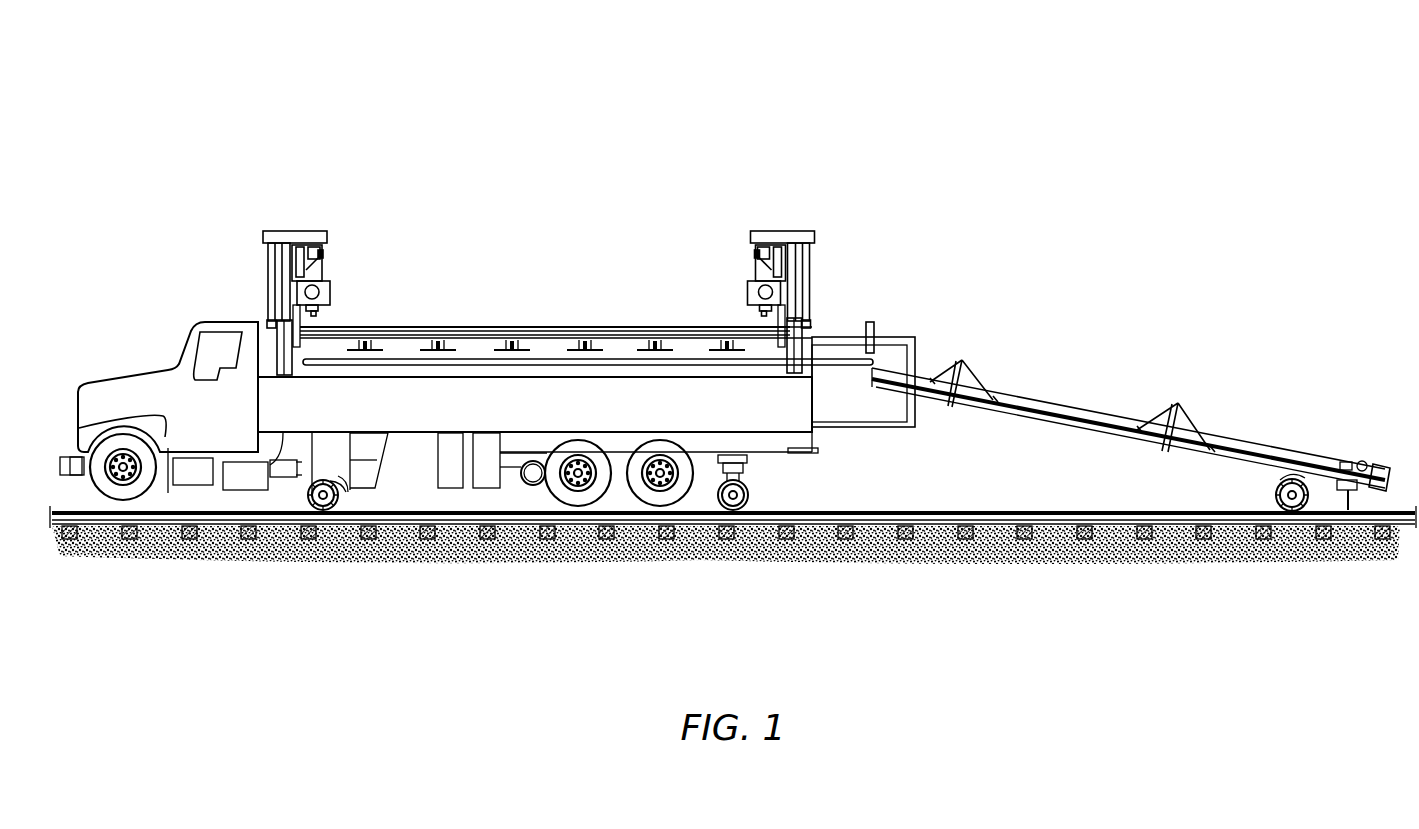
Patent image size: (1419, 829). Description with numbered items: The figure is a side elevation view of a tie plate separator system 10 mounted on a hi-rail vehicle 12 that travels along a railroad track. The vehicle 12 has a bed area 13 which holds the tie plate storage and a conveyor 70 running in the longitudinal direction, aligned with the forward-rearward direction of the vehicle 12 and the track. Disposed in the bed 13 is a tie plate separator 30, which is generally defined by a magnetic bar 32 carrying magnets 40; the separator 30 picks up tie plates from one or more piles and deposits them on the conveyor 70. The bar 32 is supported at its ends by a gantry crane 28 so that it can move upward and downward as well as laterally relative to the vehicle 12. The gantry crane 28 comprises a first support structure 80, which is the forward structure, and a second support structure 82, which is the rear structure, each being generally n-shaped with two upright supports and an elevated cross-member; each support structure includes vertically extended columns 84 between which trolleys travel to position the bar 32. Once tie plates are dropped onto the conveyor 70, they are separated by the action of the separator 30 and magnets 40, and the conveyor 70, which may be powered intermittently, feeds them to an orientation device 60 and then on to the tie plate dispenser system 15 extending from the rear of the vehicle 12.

The tie plate separator system 10 is at (840, 92).
The rail vehicle 12 is at (175, 307).
The bed area 13 is at (460, 288).
The tie plate dispenser system 15 is at (1096, 392).
The gantry crane 28 is at (798, 215).
The tie plate separator 30 is at (510, 312).
The magnetic bar 32 is at (628, 333).
The magnets 40 is at (440, 337).
The orientation device 60 is at (831, 338).
The conveyor 70 is at (745, 343).
The first support structure 80 is at (258, 252).
The second support structure 82 is at (832, 238).
The column 84 is at (272, 353).